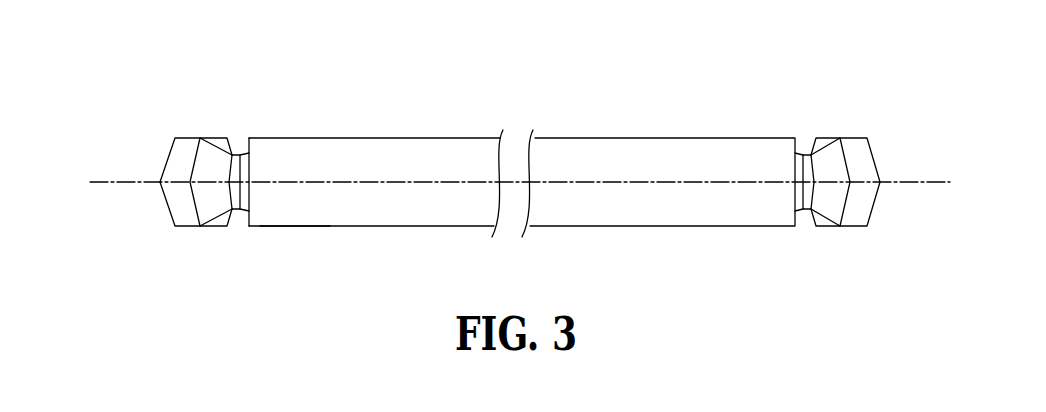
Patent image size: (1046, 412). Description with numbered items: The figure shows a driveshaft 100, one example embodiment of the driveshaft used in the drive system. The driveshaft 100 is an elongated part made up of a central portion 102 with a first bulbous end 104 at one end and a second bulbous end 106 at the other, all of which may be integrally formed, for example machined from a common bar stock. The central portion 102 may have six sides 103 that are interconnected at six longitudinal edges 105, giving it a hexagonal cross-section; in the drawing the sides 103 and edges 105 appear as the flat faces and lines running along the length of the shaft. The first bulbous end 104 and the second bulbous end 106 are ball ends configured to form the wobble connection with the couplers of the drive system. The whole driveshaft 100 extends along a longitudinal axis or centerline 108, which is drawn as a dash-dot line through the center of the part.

The driveshaft 100 is at (784, 56).
The central portion 102 is at (368, 146).
The sides 103 is at (675, 215).
The first bulbous end 104 is at (185, 148).
The longitudinal edges 105 is at (318, 227).
The second bulbous end 106 is at (863, 207).
The longitudinal axis or centerline 108 is at (125, 181).